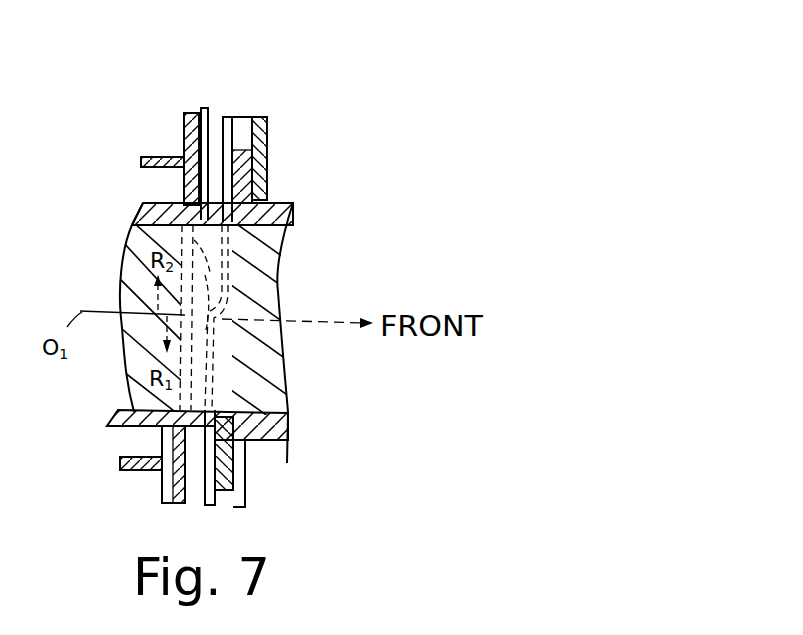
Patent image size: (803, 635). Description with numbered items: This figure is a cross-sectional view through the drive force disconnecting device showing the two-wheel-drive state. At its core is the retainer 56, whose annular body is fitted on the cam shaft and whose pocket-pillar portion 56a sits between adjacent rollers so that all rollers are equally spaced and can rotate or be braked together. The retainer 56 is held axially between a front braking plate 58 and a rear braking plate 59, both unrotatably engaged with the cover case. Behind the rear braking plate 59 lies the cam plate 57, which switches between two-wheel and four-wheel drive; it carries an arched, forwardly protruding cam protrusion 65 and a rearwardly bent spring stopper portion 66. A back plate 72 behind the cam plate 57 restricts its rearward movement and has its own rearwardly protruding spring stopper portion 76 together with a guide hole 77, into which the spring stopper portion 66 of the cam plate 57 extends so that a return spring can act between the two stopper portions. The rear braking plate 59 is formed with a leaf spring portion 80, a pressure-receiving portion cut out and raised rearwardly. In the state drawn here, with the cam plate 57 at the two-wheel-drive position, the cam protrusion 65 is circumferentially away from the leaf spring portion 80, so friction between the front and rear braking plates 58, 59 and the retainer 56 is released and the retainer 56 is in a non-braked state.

The retainer 56 is at (243, 117).
The pocket-pillar portion 56a is at (300, 222).
The cam plate 57 is at (207, 106).
The front braking plate 58 is at (263, 117).
The rear braking plate 59 is at (227, 115).
The cam protrusion 65 is at (210, 238).
The spring stopper portion 66 is at (140, 160).
The back plate 72 is at (163, 490).
The spring stopper portion 76 is at (122, 462).
The guide hole 77 is at (184, 180).
The leaf spring portion 80 is at (222, 367).